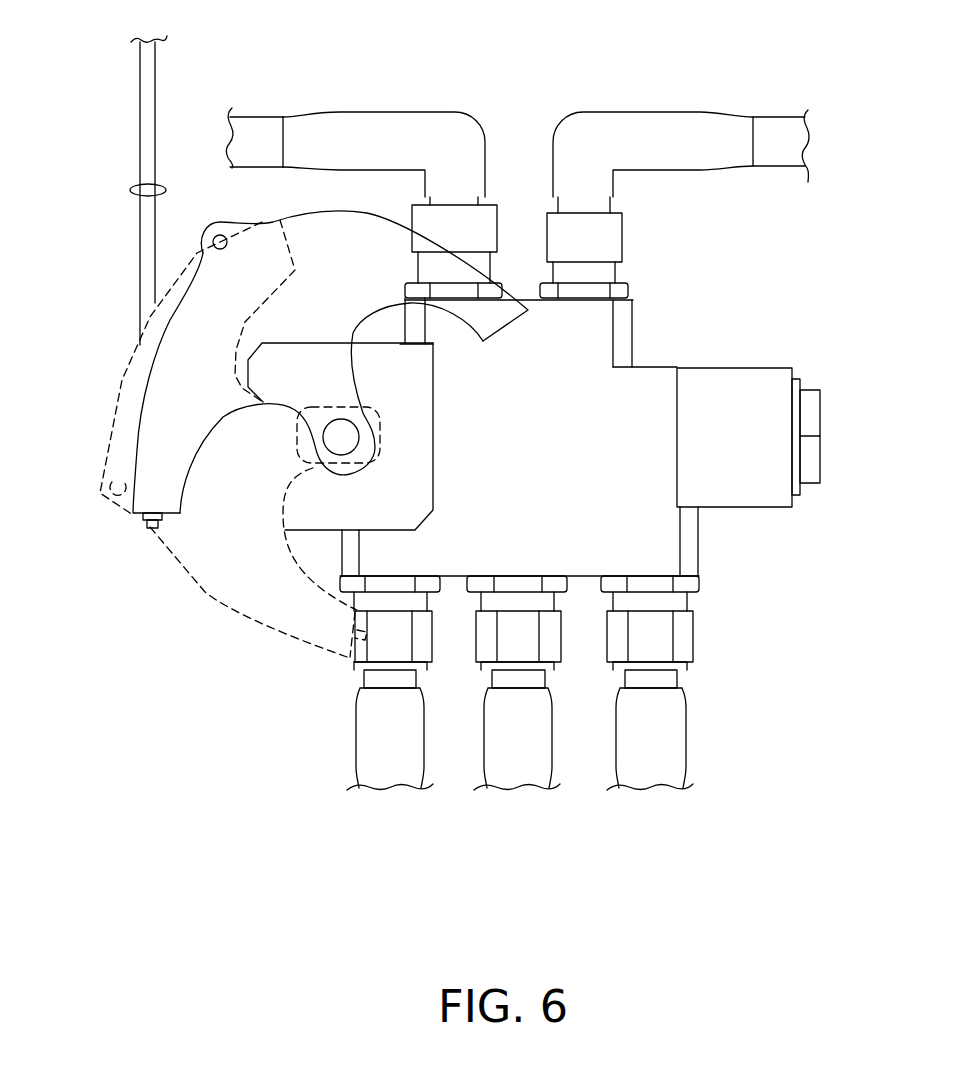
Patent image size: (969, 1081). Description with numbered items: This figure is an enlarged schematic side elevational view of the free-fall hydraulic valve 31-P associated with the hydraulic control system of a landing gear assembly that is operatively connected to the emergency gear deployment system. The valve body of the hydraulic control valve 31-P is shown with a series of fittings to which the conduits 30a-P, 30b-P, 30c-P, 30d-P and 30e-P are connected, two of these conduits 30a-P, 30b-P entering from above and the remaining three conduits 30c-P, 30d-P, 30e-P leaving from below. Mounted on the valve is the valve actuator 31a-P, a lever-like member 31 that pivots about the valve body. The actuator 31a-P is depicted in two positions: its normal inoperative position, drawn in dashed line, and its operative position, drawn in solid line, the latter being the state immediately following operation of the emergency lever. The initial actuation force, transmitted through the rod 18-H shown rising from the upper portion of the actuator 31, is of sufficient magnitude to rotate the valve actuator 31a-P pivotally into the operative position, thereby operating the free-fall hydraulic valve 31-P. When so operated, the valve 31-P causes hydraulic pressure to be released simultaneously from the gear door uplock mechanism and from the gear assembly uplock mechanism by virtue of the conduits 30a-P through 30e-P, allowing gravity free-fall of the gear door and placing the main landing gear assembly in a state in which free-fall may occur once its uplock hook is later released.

The handle rod 18-H is at (135, 188).
The conduit 30a-P is at (393, 130).
The conduit 30b-P is at (670, 140).
The conduit 30c-P is at (380, 747).
The conduit 30d-P is at (497, 760).
The conduit 30e-P is at (660, 752).
The lever handle 31 is at (228, 577).
The free-fall hydraulic valve 31-P is at (576, 399).
The valve actuator 31a-P is at (356, 316).